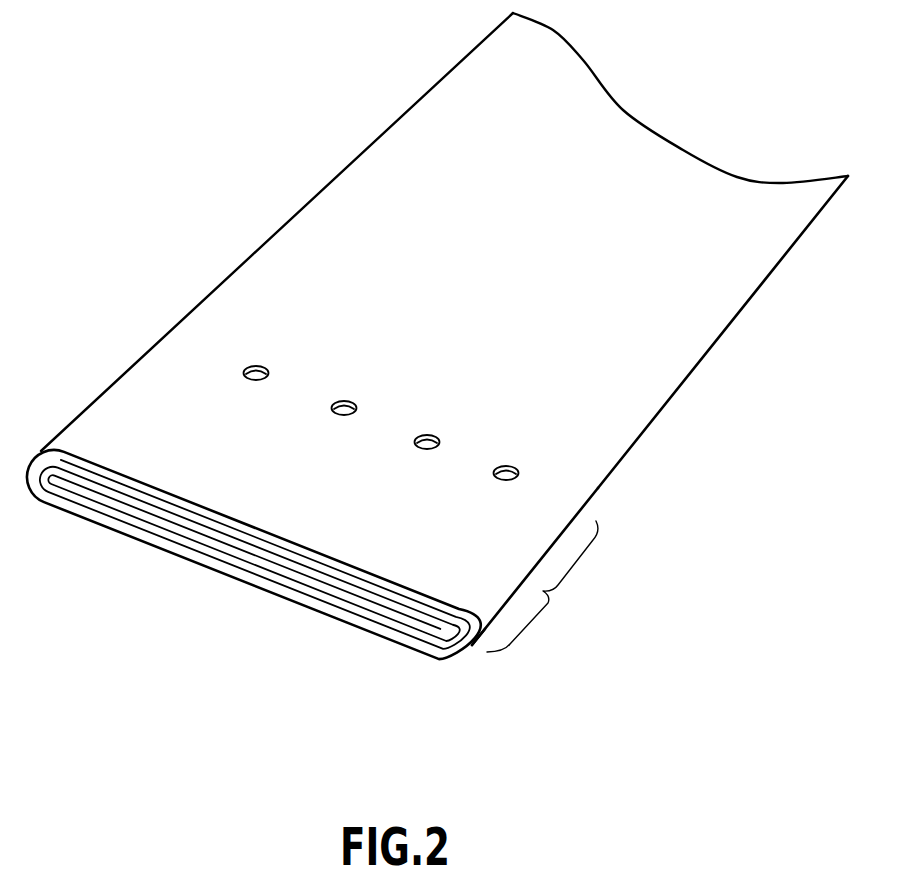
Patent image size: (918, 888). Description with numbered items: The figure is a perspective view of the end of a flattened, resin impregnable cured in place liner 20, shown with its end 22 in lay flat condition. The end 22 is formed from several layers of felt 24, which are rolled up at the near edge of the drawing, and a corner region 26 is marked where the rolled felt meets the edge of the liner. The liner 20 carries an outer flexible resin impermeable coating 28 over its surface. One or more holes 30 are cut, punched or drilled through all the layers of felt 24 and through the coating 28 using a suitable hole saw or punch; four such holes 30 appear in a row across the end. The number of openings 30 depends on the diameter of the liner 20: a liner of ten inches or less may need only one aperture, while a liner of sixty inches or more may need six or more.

The cured in place liner 20 is at (433, 373).
The end 22 is at (567, 588).
The layers of felt 24 is at (440, 640).
The fold corner 26 is at (470, 654).
The outer flexible resin impermeable coating 28 is at (667, 327).
The holes 30 is at (520, 472).